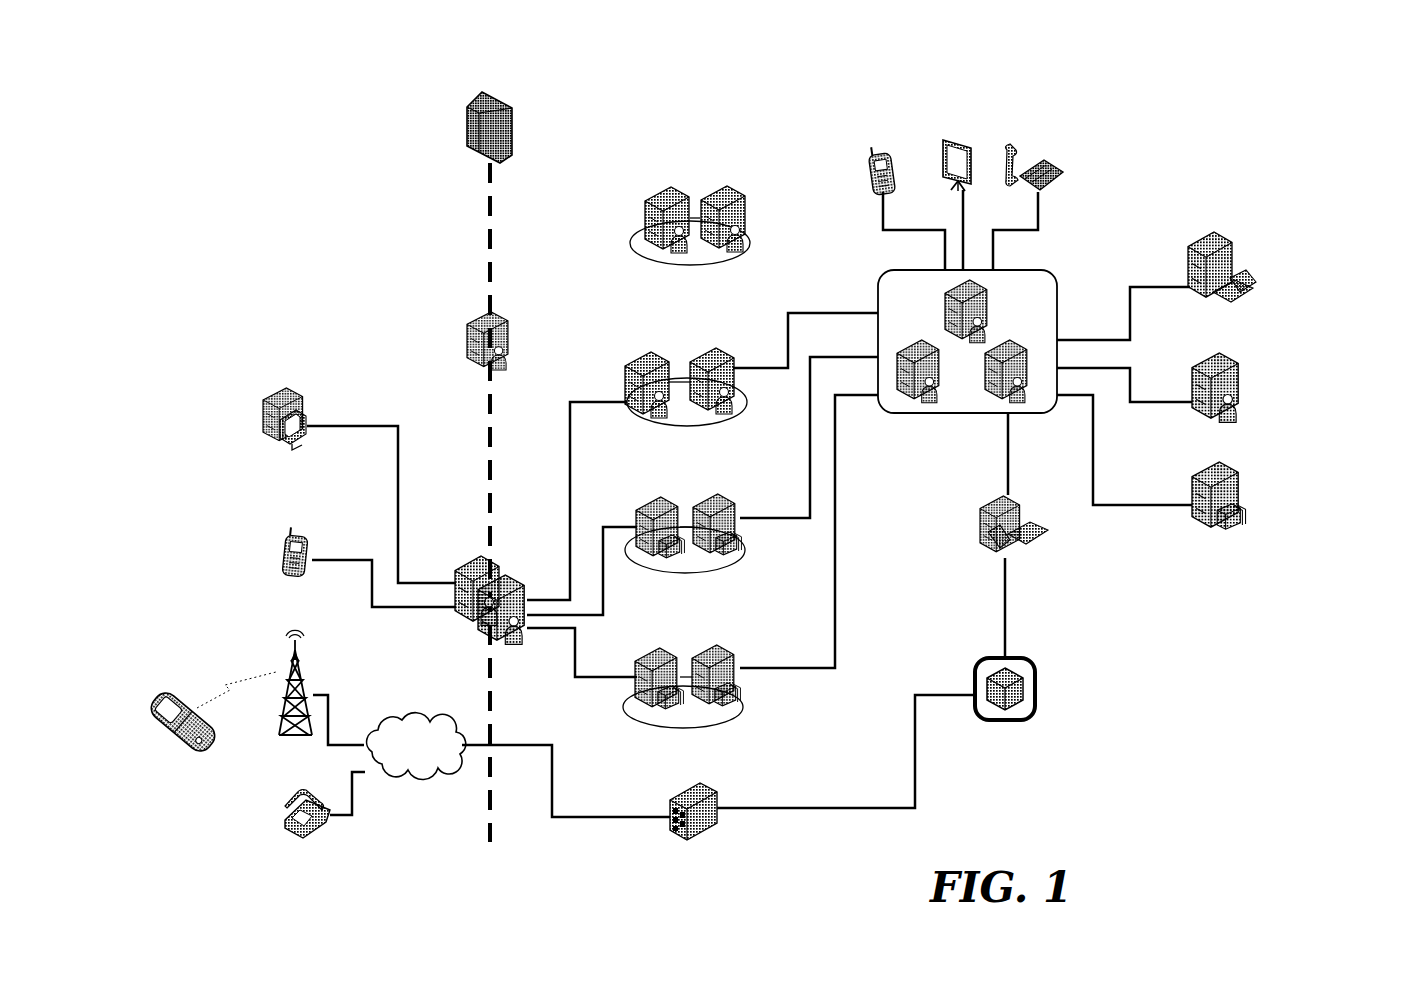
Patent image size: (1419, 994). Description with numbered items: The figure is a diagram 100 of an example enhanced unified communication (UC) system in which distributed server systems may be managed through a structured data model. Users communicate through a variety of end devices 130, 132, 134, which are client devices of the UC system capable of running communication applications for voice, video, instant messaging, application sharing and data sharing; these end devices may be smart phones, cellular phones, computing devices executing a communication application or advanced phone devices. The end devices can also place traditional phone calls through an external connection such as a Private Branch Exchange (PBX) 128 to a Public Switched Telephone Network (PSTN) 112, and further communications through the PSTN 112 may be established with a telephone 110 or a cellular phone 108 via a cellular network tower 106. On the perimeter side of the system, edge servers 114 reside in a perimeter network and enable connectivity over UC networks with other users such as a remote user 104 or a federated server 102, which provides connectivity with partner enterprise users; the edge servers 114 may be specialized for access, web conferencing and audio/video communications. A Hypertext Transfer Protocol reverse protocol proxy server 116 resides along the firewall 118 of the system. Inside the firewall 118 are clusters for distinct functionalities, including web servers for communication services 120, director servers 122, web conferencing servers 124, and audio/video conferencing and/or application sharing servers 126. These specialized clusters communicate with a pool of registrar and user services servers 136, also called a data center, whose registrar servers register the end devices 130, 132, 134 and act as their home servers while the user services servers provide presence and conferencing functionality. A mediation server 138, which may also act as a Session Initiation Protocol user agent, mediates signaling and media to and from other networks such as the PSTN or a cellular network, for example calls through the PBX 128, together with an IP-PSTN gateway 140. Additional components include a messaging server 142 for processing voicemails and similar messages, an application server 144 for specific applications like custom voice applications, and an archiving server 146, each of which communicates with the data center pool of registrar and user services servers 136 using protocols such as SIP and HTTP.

The diagram 100 is at (1262, 98).
The federated server 102 is at (279, 390).
The remote user 104 is at (283, 530).
The cellular network tower 106 is at (277, 645).
The cellular phone 108 is at (168, 684).
The telephone 110 is at (280, 803).
The Public Switched Telephone Network (PSTN) 112 is at (392, 712).
The edge servers 114 is at (467, 632).
The HTTP reverse protocol proxy server 116 is at (477, 304).
The firewall 118 is at (461, 102).
The web servers for communication services 120 is at (680, 185).
The director servers 122 is at (680, 352).
The web conferencing servers 124 is at (680, 493).
The audio/video conferencing and/or application sharing servers 126 is at (690, 645).
The Private Branch Exchange (PBX) 128 is at (680, 783).
The end device 130 is at (867, 145).
The end device 132 is at (950, 128).
The end device 134 is at (1040, 158).
The pool of registrar and user services servers 136 is at (878, 268).
The mediation server 138 is at (983, 500).
The IP-PSTN gateway 140 is at (990, 650).
The messaging server 142 is at (1226, 216).
The application server 144 is at (1223, 338).
The archiving server 146 is at (1223, 455).